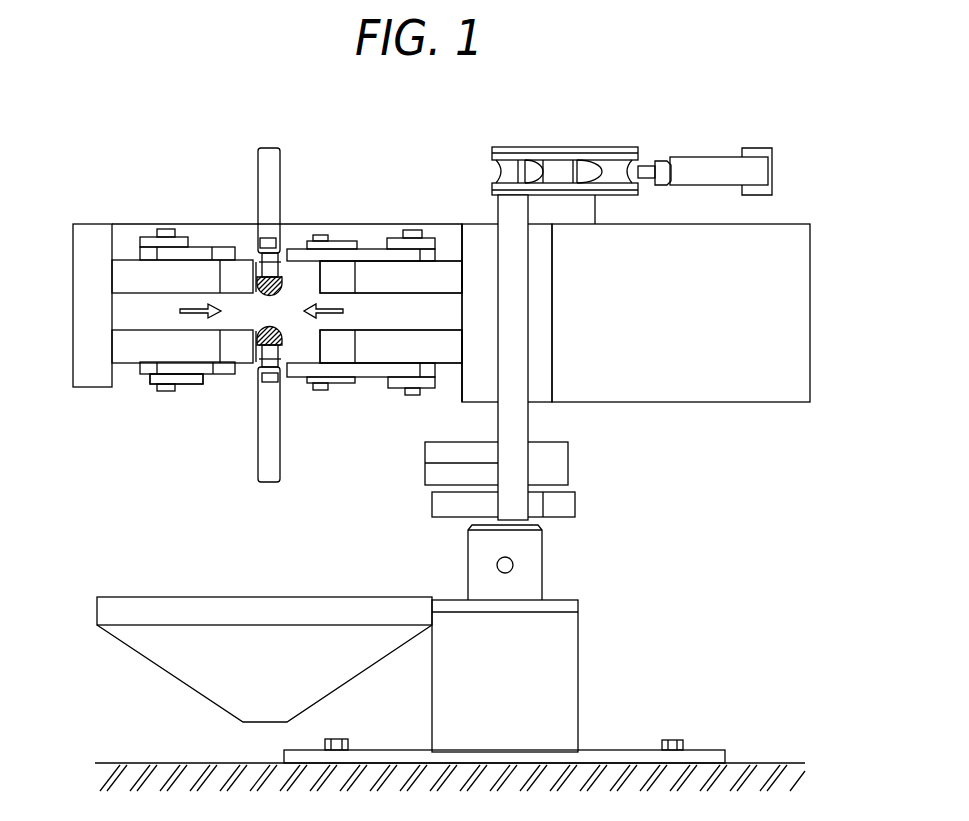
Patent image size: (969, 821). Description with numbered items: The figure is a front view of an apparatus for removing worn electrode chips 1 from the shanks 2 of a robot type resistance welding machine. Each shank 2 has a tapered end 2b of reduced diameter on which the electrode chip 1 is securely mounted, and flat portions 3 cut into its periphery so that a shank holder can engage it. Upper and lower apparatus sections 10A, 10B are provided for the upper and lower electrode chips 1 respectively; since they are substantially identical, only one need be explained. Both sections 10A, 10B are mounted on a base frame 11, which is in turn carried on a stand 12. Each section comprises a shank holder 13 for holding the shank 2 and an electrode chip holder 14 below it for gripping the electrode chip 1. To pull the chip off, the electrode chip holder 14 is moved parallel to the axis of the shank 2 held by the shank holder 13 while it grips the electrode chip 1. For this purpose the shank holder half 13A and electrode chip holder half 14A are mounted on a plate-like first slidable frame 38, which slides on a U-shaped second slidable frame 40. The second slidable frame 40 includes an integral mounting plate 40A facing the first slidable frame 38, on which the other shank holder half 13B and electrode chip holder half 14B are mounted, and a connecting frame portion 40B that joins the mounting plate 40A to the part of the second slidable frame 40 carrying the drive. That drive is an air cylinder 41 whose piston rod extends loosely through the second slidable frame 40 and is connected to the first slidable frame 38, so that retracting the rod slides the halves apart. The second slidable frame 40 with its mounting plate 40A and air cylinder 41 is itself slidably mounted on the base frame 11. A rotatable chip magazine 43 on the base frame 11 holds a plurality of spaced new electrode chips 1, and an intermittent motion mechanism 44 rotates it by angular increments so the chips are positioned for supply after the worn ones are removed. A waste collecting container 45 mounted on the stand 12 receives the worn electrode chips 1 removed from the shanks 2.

The electrode chip 1 is at (293, 270).
The shank 2 is at (272, 147).
The tapered end 2b is at (282, 278).
The flat portion 3 is at (270, 237).
The upper apparatus section 10A is at (458, 268).
The lower apparatus section 10B is at (462, 352).
The base frame 11 is at (513, 458).
The stand 12 is at (527, 562).
The shank holder 13 is at (203, 378).
The shank holder half 13A is at (372, 240).
The shank holder half 13B is at (152, 242).
The electrode chip holder 14 is at (443, 277).
The electrode chip holder half 14A is at (420, 282).
The electrode chip holder half 14B is at (177, 273).
The first slidable frame 38 is at (473, 382).
The second slidable frame 40 is at (540, 393).
The mounting plate 40A is at (92, 247).
The connecting frame portion 40B is at (207, 235).
The air cylinder 41 is at (737, 376).
The chip magazine 43 is at (582, 143).
The intermittent motion mechanism 44 is at (697, 157).
The waste collecting container 45 is at (160, 608).